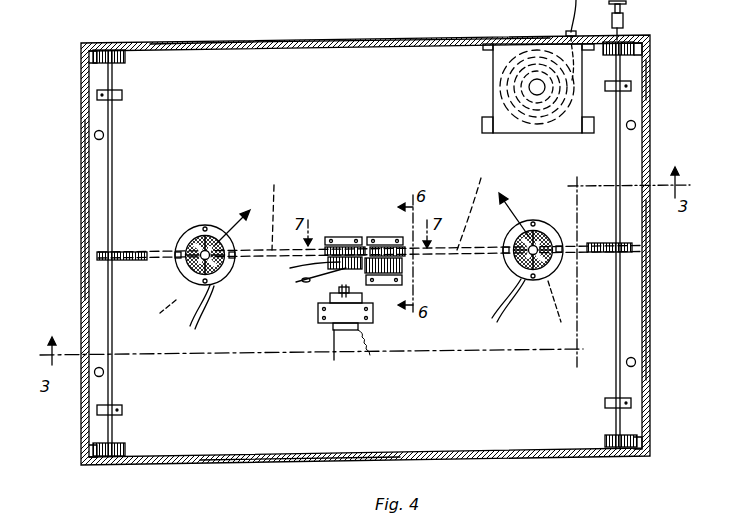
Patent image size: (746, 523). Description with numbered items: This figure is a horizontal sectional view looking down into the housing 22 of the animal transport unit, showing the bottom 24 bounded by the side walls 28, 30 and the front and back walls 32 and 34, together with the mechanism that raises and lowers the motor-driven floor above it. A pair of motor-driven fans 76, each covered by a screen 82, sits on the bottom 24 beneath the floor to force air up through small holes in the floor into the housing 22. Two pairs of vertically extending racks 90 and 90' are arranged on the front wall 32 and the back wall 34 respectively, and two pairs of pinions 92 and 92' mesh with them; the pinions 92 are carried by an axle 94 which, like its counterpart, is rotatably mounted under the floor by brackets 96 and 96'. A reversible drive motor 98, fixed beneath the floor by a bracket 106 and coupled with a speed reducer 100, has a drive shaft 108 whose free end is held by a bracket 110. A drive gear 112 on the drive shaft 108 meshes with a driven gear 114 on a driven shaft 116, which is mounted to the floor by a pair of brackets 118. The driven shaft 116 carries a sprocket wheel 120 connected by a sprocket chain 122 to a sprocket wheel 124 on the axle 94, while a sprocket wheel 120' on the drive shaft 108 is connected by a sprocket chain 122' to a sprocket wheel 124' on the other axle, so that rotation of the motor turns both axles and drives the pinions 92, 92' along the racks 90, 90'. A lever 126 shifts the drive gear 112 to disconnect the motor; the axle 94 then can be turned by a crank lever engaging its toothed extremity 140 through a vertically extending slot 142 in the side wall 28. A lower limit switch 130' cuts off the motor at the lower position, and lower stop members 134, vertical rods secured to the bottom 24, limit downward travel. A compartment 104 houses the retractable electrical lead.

The housing 22 is at (252, 466).
The bottom 24 is at (400, 60).
The side wall 28 is at (322, 43).
The side wall 30 is at (307, 461).
The front wall 32 is at (647, 287).
The back wall 34 is at (80, 154).
The motor-driven fan 76 is at (205, 228).
The screen 82 is at (190, 262).
The rack 90 is at (668, 238).
The rack 90' is at (59, 254).
The pinion 92 is at (617, 244).
The pinion 92' is at (141, 253).
The axle 94 is at (616, 176).
The bracket 96 is at (618, 245).
The bracket 96' is at (142, 250).
The reversible drive motor 98 is at (316, 356).
The speed reducer 100 is at (329, 311).
The compartment 104 is at (492, 104).
The bracket 106 is at (373, 318).
The drive shaft 108 is at (340, 289).
The bracket 110 is at (338, 237).
The drive gear 112 is at (290, 267).
The driven gear 114 is at (402, 270).
The driven shaft 116 is at (404, 254).
The bracket 118 is at (398, 237).
The sprocket wheel 120 is at (389, 201).
The sprocket wheel 120' is at (350, 213).
The sprocket chain 122 is at (484, 203).
The sprocket chain 122' is at (272, 206).
The sprocket wheel 124 is at (609, 266).
The sprocket wheel 124' is at (368, 238).
The lever 126 is at (296, 282).
The lower limit switch 130' is at (675, 80).
The lower stop member 134 is at (104, 135).
The toothed extremity 140 is at (622, 38).
The slot 142 is at (604, 42).